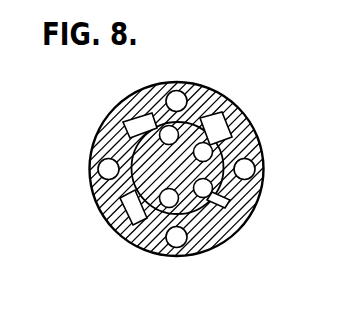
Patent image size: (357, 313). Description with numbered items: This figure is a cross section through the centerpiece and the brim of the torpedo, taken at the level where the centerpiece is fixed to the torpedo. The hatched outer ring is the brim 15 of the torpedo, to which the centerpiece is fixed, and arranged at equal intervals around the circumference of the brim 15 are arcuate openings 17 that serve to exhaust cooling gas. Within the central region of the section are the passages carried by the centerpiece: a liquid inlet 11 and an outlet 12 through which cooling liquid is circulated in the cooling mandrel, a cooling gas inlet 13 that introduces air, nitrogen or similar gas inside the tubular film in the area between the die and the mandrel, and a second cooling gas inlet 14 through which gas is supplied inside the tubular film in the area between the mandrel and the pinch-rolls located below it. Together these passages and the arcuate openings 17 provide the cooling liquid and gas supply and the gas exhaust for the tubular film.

The liquid inlet 11 is at (163, 139).
The outlet 12 is at (205, 149).
The cooling gas inlet 13 is at (204, 189).
The cooling gas inlet 14 is at (163, 200).
The brim 15 is at (211, 243).
The arcuate openings 17 is at (131, 135).